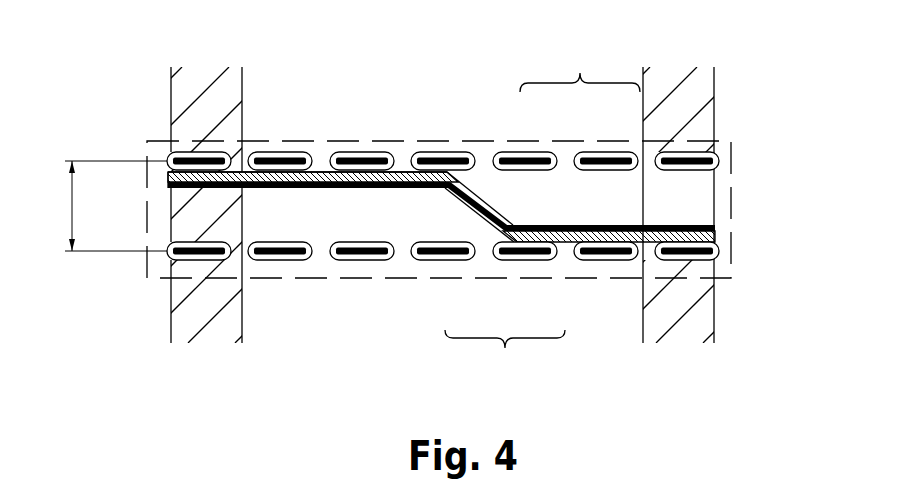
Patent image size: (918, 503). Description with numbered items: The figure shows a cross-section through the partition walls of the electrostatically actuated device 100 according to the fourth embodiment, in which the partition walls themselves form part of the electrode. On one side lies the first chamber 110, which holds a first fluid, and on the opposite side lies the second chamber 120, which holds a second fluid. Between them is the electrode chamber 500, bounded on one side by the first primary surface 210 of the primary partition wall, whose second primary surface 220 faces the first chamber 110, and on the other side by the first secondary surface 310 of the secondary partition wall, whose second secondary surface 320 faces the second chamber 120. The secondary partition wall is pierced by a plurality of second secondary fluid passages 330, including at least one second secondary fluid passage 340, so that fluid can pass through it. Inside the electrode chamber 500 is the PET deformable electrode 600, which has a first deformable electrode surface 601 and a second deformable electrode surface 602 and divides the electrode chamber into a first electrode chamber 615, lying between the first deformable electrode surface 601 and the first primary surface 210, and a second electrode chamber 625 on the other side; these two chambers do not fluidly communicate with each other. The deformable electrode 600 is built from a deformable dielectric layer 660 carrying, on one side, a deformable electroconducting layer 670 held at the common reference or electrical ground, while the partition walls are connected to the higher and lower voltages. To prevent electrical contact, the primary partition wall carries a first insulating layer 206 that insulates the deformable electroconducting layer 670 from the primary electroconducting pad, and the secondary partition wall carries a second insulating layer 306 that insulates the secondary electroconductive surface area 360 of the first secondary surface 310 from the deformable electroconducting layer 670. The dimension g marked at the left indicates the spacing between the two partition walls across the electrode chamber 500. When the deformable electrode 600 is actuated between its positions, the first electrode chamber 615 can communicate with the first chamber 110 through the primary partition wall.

The electrostatically actuated device 100 is at (795, 128).
The first chamber 110 is at (297, 103).
The second chamber 120 is at (294, 336).
The first insulating layer 206 is at (356, 152).
The first primary surface 210 is at (613, 170).
The second primary surface 220 is at (517, 152).
The second insulating layer 306 is at (287, 260).
The first secondary surface 310 is at (364, 242).
The second secondary surface 320 is at (363, 260).
The plurality of second secondary fluid passages 330 is at (582, 311).
The second secondary fluid passage 340 is at (488, 260).
The secondary electroconductive surface area 360 is at (278, 246).
The electrode chamber 500 is at (733, 212).
The deformable electrode 600 is at (404, 106).
The first deformable electrode surface 601 is at (400, 172).
The second deformable electrode surface 602 is at (480, 212).
The first electrode chamber 615 is at (555, 214).
The second electrode chamber 625 is at (327, 222).
The deformable dielectric layer 660 is at (634, 225).
The deformable electroconducting layer 670 is at (244, 211).
The gap distance g is at (72, 207).